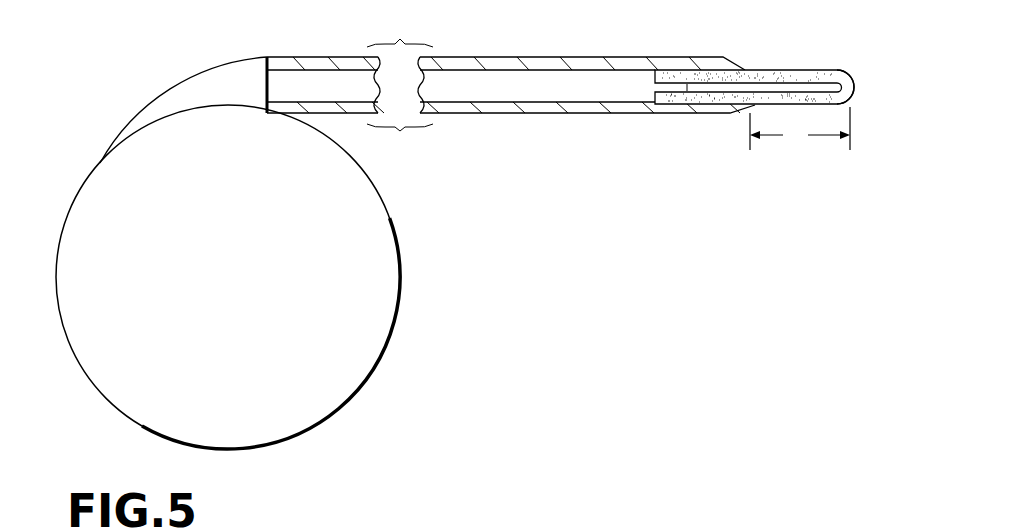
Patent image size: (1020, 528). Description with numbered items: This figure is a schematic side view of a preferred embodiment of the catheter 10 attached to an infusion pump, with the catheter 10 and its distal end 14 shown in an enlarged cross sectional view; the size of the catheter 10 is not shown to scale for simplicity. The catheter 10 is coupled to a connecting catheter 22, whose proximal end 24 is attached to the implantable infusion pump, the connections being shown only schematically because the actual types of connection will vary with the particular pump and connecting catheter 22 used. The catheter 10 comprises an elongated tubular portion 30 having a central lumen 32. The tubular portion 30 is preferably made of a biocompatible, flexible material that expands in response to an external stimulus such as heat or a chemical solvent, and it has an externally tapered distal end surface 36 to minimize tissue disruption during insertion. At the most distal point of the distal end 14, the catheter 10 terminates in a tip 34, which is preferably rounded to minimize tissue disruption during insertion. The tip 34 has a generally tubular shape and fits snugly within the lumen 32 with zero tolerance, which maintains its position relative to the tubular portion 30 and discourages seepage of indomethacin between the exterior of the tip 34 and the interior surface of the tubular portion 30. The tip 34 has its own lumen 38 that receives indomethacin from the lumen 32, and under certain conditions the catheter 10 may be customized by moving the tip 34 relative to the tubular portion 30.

The catheter 10 is at (580, 137).
The distal end 14 is at (774, 95).
The connecting catheter 22 is at (340, 110).
The proximal end 24 is at (283, 38).
The tubular portion 30 is at (573, 110).
The central lumen 32 is at (543, 80).
The tip 34 is at (853, 88).
The tapered distal end surface 36 is at (740, 66).
The lumen 38 is at (688, 92).